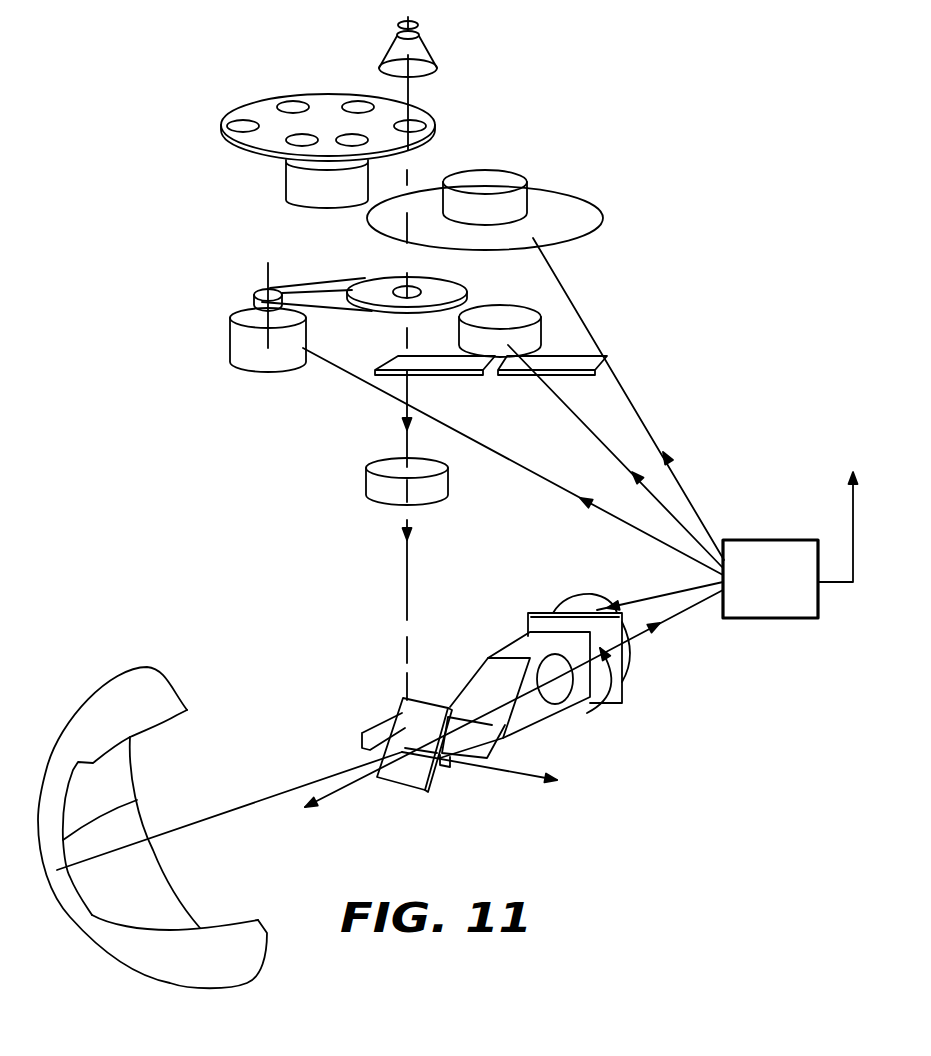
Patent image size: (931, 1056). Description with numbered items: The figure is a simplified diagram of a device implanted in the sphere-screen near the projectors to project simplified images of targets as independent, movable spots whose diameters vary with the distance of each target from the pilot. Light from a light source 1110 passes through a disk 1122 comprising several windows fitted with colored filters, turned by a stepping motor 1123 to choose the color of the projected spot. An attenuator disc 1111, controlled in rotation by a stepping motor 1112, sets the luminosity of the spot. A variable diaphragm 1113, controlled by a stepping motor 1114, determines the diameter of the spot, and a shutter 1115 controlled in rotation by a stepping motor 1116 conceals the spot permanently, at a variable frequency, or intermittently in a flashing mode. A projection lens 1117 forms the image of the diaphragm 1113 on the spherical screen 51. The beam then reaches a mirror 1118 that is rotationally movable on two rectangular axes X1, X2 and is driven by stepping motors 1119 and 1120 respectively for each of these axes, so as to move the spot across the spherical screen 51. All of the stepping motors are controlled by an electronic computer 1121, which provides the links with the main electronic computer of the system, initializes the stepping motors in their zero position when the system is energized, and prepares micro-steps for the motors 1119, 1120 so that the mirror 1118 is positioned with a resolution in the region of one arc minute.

The light source 1110 is at (393, 56).
The disk 1122 is at (240, 125).
The stepping motor 1123 is at (292, 185).
The stepping motor 1112 is at (522, 202).
The attenuator disc 1111 is at (593, 215).
The variable diaphragm 1113 is at (370, 283).
The stepping motor 1114 is at (243, 345).
The stepping motor 1116 is at (528, 335).
The shutter 1115 is at (595, 362).
The projection lens 1117 is at (377, 485).
The electronic computer 1121 is at (777, 547).
The stepping motor 1120 is at (633, 657).
The stepping motor 1119 is at (562, 702).
The mirror 1118 is at (415, 717).
The spherical screen 51 is at (92, 688).
The axis X1 is at (496, 777).
The axis X2 is at (290, 819).